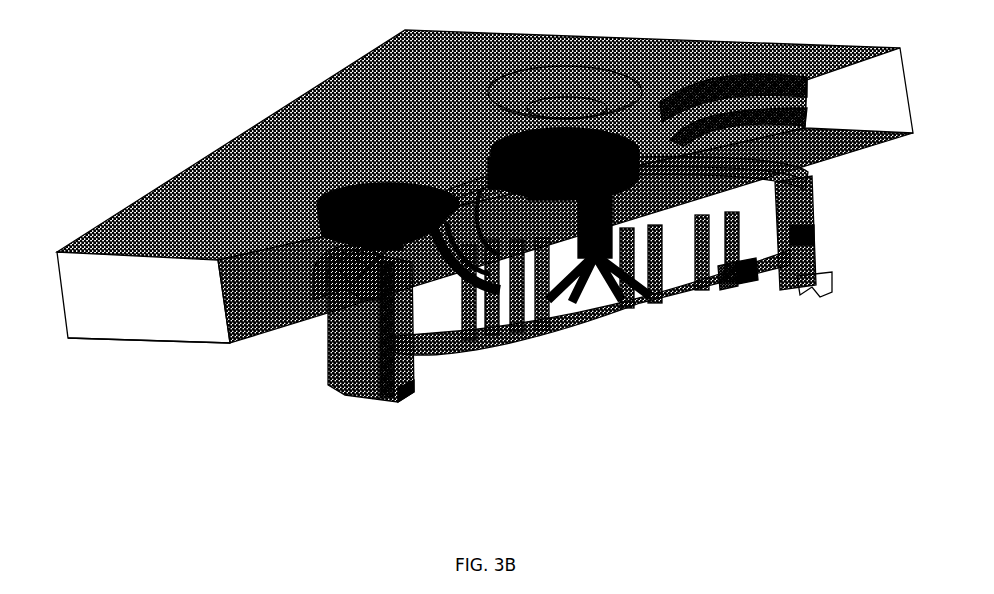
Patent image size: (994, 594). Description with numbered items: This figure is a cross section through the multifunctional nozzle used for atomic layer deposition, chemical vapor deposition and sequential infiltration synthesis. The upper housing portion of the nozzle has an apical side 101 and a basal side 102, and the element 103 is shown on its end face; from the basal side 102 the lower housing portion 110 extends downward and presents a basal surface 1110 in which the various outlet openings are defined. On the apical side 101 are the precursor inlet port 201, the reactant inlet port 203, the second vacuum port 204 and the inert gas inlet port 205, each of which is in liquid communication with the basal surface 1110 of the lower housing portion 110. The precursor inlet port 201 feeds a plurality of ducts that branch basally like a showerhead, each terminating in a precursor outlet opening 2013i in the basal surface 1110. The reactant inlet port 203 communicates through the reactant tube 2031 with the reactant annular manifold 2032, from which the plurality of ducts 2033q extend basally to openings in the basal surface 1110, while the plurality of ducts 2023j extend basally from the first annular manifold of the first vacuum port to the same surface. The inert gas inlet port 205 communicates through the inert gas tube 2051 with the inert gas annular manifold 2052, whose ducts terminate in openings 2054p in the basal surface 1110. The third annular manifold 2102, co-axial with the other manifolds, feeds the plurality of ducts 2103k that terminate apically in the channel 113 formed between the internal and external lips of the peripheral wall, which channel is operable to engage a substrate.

The apical side 101 is at (190, 217).
The basal side 102 is at (173, 343).
The plate end face 103 is at (143, 297).
The lower housing portion 110 is at (350, 343).
The channel 113 is at (793, 277).
The precursor inlet port 201 is at (495, 150).
The reactant inlet port 203 is at (375, 180).
The second vacuum port 204 is at (563, 100).
The inert gas inlet port 205 is at (723, 97).
The basal surface 1110 is at (572, 332).
The precursor outlet opening 2013i is at (545, 332).
The plurality of ducts 2023j is at (655, 300).
The reactant tube 2031 is at (400, 263).
The reactant annular manifold 2032 is at (742, 272).
The plurality of ducts 2033q is at (725, 275).
The inert gas tube 2051 is at (807, 173).
The inert gas annular manifold 2052 is at (493, 300).
The opening 2054p is at (702, 288).
The third annular manifold 2102 is at (783, 193).
The plurality of ducts 2103k is at (415, 385).